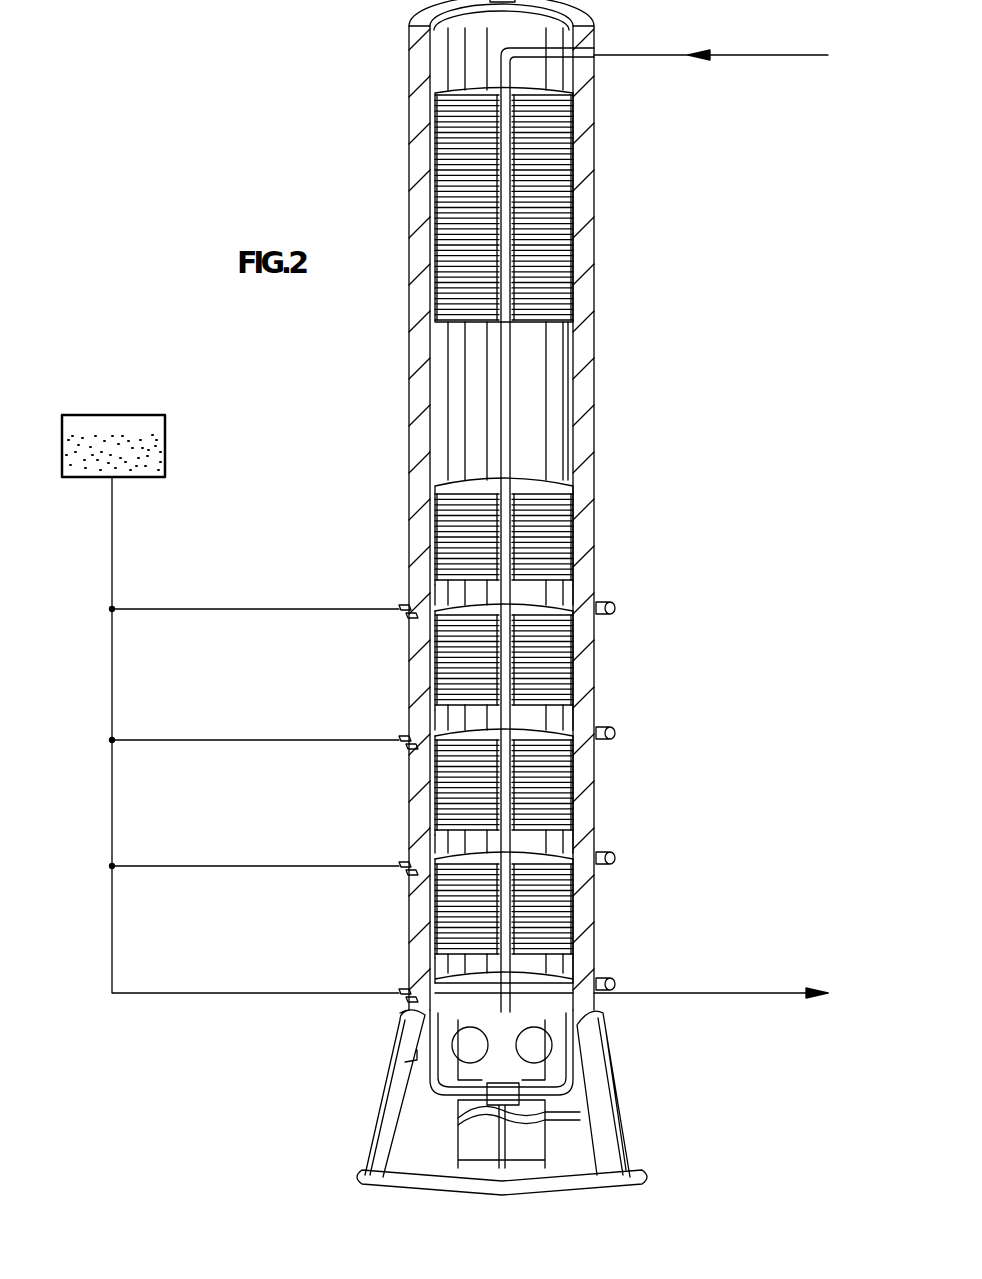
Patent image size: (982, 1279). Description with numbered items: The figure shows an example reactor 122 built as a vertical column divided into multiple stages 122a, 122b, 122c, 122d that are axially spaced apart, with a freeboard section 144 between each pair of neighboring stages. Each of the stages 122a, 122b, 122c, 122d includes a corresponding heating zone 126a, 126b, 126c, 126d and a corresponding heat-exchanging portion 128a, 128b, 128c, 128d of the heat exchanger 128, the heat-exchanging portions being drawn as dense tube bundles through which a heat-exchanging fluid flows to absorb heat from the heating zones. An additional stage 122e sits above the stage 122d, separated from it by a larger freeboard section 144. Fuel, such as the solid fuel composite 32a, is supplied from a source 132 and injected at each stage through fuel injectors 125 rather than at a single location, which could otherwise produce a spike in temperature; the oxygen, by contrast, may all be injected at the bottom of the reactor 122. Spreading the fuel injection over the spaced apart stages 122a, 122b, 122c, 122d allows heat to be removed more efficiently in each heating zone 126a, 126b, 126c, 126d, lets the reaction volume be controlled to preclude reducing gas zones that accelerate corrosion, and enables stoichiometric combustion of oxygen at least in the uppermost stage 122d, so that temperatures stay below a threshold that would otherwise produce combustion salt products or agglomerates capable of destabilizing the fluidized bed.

The reactor 122 is at (598, 392).
The stage 122a is at (433, 923).
The stage 122b is at (433, 797).
The stage 122c is at (433, 676).
The stage 122d is at (433, 540).
The additional stage 122e is at (577, 208).
The fuel injector 125 is at (558, 605).
The heating zone 126a is at (570, 926).
The heating zone 126b is at (570, 806).
The heating zone 126c is at (570, 672).
The heating zone 126d is at (570, 572).
The heat exchanger 128 is at (668, 1002).
The heat-exchanging portion 128a is at (562, 916).
The heat-exchanging portion 128b is at (562, 786).
The heat-exchanging portion 128c is at (562, 660).
The heat-exchanging portion 128d is at (555, 505).
The reservoir 132 is at (165, 455).
The solid fuel composite 32a is at (133, 450).
The freeboard section 144 is at (553, 382).